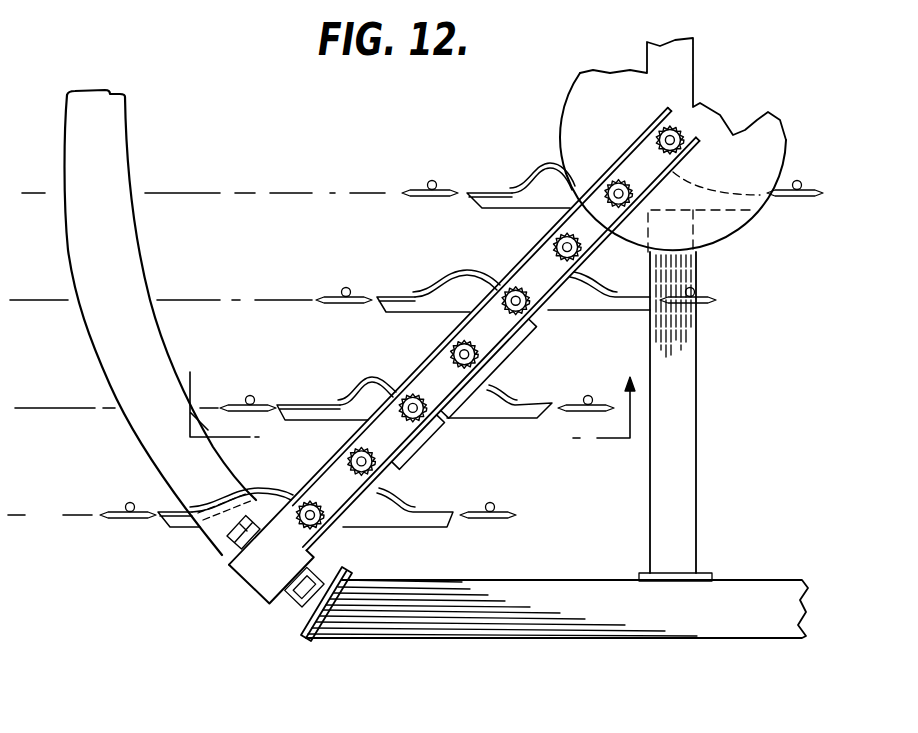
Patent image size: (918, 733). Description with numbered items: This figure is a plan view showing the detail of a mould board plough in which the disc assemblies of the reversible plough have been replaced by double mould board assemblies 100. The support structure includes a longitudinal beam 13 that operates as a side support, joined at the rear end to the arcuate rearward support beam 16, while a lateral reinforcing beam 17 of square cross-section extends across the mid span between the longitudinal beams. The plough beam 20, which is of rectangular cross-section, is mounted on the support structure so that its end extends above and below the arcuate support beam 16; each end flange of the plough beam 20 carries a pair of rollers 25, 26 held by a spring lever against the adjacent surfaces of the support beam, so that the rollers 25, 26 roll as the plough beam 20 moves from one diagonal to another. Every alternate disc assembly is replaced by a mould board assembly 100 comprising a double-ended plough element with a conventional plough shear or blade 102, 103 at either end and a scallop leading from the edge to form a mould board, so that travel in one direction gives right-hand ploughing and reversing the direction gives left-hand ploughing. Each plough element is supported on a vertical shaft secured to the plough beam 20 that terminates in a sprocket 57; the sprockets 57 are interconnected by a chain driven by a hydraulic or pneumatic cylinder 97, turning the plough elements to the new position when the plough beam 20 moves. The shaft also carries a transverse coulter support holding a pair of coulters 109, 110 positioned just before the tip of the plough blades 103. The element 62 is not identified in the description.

The arcuate rearward support beam 16 is at (92, 106).
The drum 62 is at (753, 140).
The lateral reinforcing beam 17 is at (675, 400).
The longitudinal beam 13 is at (495, 685).
The coulter 110 is at (443, 183).
The coulter 109 is at (507, 517).
The plough shear or blade 102 is at (495, 190).
The plough shear or blade 103 is at (430, 520).
The double mould board assembly 100 is at (503, 445).
The hydraulic or pneumatic cylinder 97 is at (517, 347).
The sprocket 57 is at (423, 437).
The plough beam 20 is at (277, 553).
The roller 26 is at (213, 537).
The roller 25 is at (292, 607).